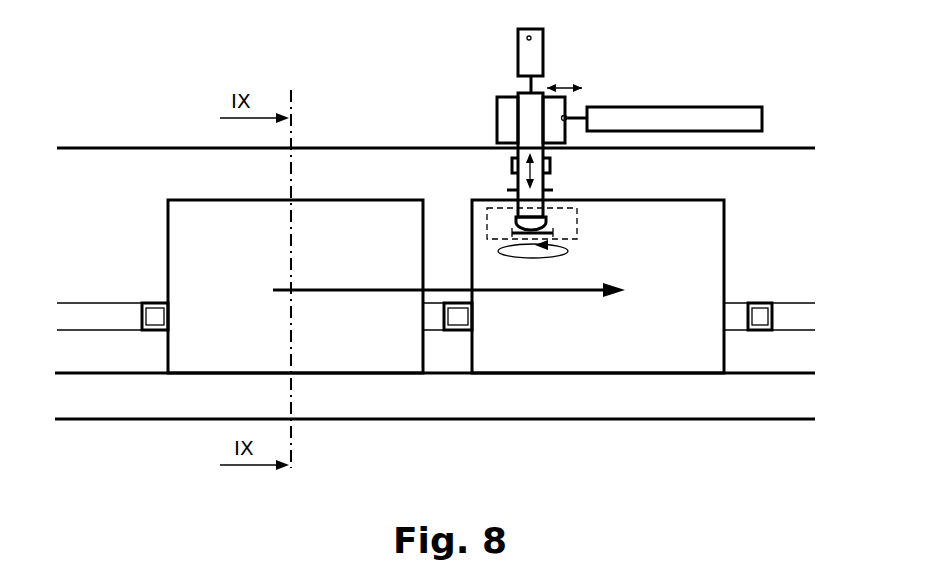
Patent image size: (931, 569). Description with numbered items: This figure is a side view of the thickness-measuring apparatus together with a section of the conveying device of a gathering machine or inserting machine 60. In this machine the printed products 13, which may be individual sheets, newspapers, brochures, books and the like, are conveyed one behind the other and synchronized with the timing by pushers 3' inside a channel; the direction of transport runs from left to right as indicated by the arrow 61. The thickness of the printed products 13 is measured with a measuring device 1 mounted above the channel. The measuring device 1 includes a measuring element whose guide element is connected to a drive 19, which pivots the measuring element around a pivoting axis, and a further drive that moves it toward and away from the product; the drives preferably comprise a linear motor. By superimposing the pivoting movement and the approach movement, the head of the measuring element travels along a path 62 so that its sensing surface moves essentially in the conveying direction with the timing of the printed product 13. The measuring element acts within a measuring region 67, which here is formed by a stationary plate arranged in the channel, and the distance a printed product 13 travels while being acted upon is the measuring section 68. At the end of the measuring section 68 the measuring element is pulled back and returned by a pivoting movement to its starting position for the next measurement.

The measuring device 1 is at (607, 68).
The drive 19 is at (655, 118).
The gathering machine or inserting machine 60 is at (386, 130).
The printed products 13 is at (207, 237).
The pushers 3' is at (436, 402).
The arrow 61 is at (362, 292).
The path 62 is at (525, 267).
The measuring region 67 is at (495, 228).
The measuring section 68 is at (552, 232).